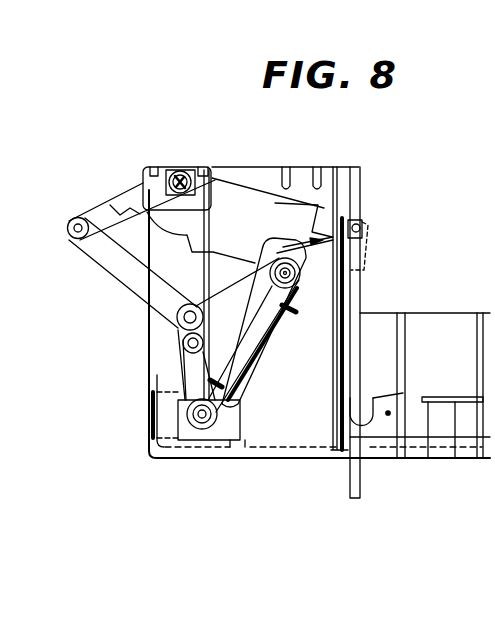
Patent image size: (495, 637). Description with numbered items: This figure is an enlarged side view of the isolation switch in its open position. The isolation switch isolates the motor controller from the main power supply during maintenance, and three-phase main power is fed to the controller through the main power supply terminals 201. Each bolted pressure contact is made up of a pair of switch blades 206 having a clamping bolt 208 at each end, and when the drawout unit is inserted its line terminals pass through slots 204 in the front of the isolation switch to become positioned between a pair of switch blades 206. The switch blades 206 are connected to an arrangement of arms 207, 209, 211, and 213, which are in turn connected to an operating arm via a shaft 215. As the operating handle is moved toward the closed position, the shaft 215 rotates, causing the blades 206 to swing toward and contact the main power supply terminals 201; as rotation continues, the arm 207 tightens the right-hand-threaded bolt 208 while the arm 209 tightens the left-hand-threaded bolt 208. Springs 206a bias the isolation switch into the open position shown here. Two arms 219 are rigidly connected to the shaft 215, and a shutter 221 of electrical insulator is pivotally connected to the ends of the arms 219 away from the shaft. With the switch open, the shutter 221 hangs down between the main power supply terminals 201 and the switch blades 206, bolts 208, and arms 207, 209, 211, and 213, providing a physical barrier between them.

The main power supply terminals 201 is at (377, 423).
The slots 204 is at (138, 443).
The switch blades 206 is at (243, 345).
The springs 206a is at (242, 387).
The arm 207 is at (185, 352).
The clamping bolt 208 is at (345, 262).
The arm 209 is at (218, 272).
The arm 211 is at (100, 258).
The arm 213 is at (98, 212).
The shaft 215 is at (183, 167).
The arms 219 is at (229, 197).
The shutter 221 is at (338, 383).